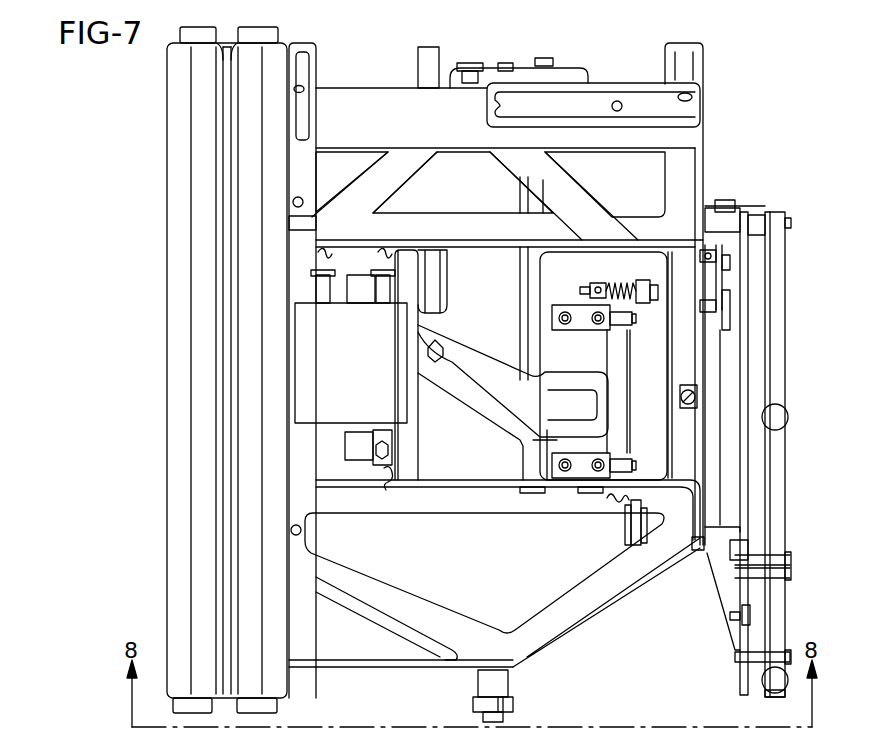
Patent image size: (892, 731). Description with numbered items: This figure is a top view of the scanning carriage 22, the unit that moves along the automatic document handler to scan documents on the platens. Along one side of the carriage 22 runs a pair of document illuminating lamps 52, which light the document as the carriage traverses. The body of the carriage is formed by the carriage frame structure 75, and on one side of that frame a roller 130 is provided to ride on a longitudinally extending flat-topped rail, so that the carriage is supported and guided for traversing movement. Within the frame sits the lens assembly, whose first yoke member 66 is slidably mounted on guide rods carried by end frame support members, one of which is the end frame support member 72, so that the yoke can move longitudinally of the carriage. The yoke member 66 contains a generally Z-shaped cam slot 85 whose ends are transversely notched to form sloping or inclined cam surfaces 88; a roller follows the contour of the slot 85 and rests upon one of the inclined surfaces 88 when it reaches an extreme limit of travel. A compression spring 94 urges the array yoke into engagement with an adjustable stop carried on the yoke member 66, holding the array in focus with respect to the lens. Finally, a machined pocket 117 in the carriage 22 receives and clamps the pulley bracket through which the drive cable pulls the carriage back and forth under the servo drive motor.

The carriage 22 is at (710, 62).
The document illuminating lamps 52 is at (166, 318).
The machined pocket 117 is at (672, 110).
The end frame support member 72 is at (688, 316).
The compression spring 94 is at (620, 285).
The cam slot 85 is at (483, 365).
The first yoke member 66 is at (480, 400).
The inclined cam surfaces 88 is at (580, 395).
The carriage frame structure 75 is at (597, 612).
The roller 130 is at (513, 706).